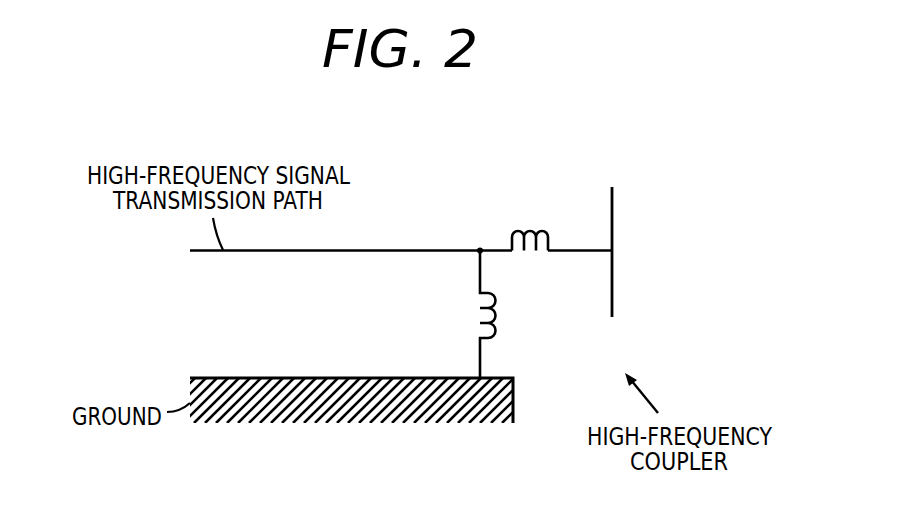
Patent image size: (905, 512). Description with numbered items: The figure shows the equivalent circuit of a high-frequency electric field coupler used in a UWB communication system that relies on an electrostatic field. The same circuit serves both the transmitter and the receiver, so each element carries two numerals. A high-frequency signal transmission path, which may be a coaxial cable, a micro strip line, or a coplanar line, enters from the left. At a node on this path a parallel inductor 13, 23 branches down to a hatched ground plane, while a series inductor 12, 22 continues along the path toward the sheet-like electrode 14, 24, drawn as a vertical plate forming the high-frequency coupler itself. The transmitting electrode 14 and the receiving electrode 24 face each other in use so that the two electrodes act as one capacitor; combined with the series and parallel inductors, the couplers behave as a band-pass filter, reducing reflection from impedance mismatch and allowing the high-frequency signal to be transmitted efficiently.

The series inductor 12 is at (520, 203).
The series inductor 22 is at (523, 218).
The parallel inductor 13 is at (431, 315).
The parallel inductor 23 is at (467, 315).
The transmitting electrode 14 is at (646, 231).
The receiving electrode 24 is at (613, 198).